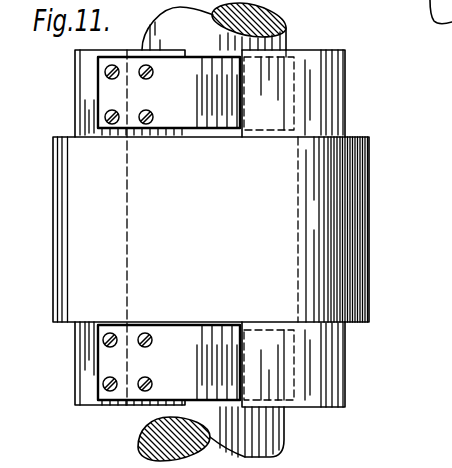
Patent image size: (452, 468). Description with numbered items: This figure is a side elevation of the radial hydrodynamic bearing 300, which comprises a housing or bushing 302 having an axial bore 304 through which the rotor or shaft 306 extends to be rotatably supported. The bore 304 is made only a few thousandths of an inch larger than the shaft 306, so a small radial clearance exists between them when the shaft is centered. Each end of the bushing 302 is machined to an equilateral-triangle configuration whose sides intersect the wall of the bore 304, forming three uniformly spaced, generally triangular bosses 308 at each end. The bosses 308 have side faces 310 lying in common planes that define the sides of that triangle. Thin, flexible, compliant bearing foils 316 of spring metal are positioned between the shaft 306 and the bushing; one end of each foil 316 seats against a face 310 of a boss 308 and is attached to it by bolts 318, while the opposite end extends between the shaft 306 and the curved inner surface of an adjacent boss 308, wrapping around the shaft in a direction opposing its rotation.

The radial hydrodynamic bearing 300 is at (375, 184).
The bushing 302 is at (353, 238).
The axial bore 304 is at (129, 192).
The shaft 306 is at (287, 38).
The triangular bosses 308 is at (90, 46).
The side faces 310 is at (85, 85).
The bearing foils 316 is at (168, 124).
The bolts 318 is at (140, 110).